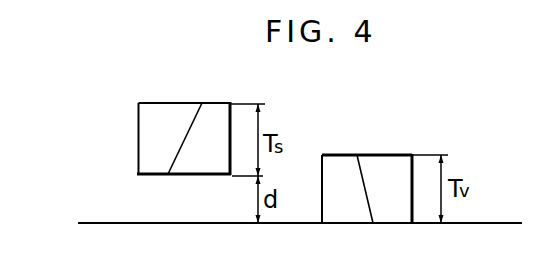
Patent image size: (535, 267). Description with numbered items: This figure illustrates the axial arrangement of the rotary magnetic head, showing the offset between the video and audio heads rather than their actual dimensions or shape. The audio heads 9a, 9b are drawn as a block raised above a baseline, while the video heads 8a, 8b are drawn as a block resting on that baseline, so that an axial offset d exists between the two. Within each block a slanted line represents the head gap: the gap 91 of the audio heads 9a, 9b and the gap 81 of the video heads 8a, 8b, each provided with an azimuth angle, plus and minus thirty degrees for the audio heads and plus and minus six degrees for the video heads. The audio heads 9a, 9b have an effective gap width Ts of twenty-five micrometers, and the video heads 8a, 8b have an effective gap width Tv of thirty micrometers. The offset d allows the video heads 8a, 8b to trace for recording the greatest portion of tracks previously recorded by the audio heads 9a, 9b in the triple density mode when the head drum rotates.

The audio head 9a is at (140, 138).
The audio head 9b is at (138, 143).
The gap of audio head 91 is at (187, 133).
The video head 8a is at (367, 166).
The video head 8b is at (378, 155).
The gap of video head 81 is at (367, 200).